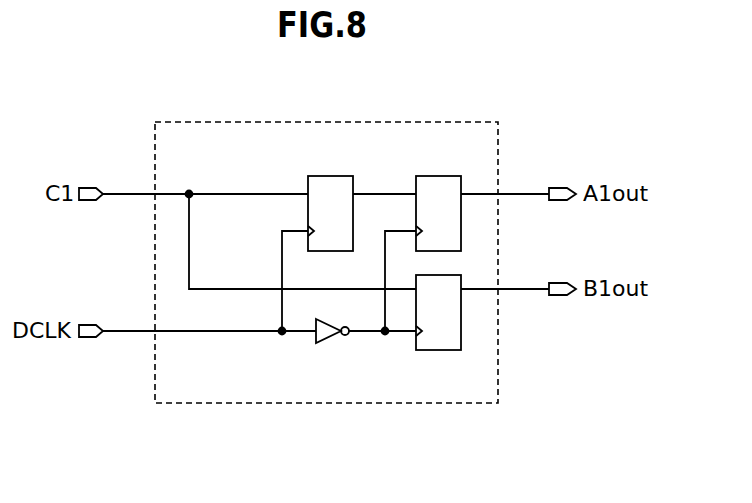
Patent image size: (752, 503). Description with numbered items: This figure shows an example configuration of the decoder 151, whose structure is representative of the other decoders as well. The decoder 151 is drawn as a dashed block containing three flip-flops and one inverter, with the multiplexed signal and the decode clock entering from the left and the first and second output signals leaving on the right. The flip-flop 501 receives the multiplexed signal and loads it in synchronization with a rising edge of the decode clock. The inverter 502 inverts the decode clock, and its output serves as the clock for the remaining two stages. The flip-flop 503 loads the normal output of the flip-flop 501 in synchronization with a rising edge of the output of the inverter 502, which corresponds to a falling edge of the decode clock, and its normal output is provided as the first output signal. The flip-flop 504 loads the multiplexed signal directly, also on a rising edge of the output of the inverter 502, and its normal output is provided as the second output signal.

The decoder 151 is at (300, 122).
The flip-flop 501 is at (330, 176).
The inverter 502 is at (328, 343).
The flip-flop 503 is at (437, 176).
The flip-flop 504 is at (441, 350).